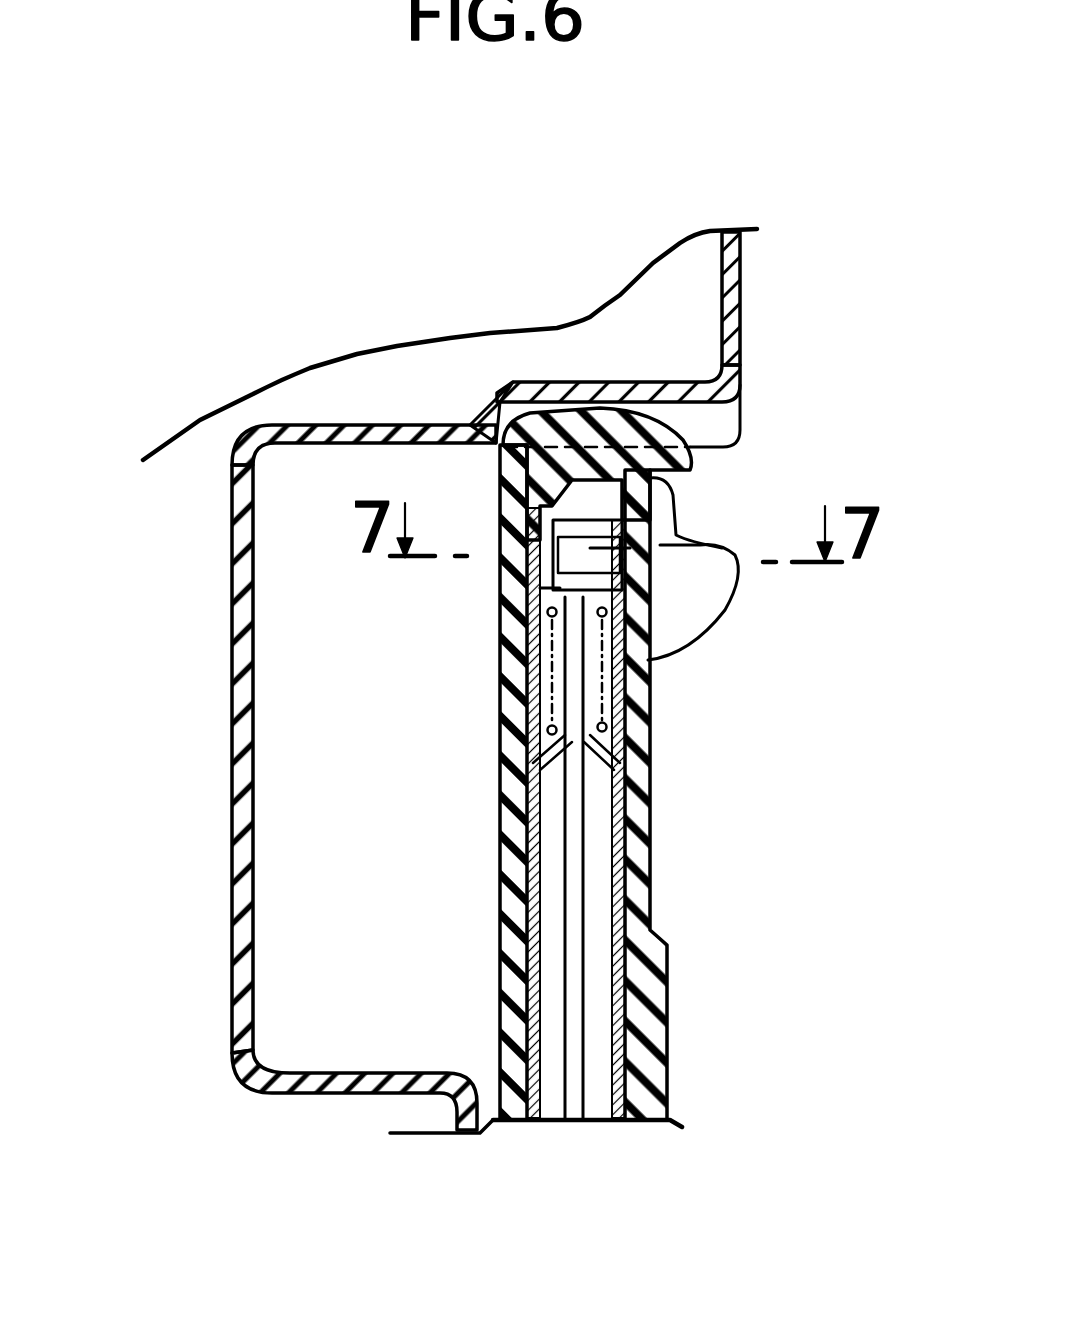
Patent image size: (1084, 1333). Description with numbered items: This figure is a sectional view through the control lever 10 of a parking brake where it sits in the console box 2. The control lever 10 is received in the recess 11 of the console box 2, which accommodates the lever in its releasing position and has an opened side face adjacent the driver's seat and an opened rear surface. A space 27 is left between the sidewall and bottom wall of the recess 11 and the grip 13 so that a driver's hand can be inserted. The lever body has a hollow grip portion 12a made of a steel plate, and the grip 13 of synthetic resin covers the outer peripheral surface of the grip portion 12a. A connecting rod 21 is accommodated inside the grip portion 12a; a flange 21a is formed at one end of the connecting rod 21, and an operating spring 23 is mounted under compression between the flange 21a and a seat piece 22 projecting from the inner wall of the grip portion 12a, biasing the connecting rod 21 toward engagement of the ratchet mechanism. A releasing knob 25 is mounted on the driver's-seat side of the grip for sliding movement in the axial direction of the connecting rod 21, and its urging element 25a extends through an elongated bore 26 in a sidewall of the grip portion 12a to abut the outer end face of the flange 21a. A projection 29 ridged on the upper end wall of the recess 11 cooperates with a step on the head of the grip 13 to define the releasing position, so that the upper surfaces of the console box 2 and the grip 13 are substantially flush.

The console box 2 is at (742, 290).
The projection 29 is at (720, 405).
The recess 11 is at (244, 900).
The space 27 is at (400, 776).
The control lever 10 is at (660, 1052).
The grip portion 12a is at (600, 1125).
The grip 13 is at (650, 728).
The connecting rod 21 is at (575, 938).
The flange 21a is at (503, 597).
The elongated bore 26 is at (503, 512).
The operating spring 23 is at (600, 700).
The seat piece 22 is at (615, 745).
The releasing knob 25 is at (718, 575).
The urging element 25a is at (683, 540).